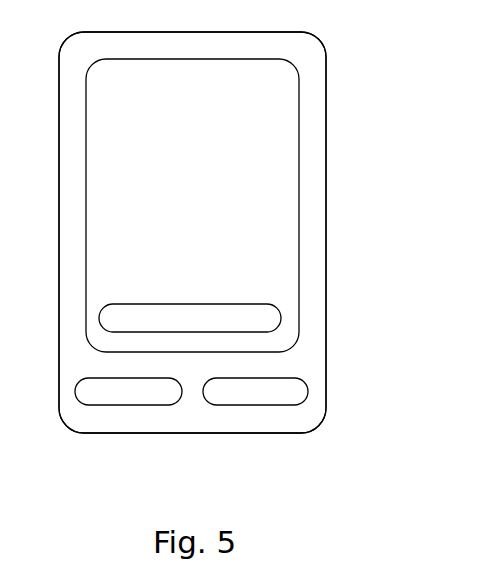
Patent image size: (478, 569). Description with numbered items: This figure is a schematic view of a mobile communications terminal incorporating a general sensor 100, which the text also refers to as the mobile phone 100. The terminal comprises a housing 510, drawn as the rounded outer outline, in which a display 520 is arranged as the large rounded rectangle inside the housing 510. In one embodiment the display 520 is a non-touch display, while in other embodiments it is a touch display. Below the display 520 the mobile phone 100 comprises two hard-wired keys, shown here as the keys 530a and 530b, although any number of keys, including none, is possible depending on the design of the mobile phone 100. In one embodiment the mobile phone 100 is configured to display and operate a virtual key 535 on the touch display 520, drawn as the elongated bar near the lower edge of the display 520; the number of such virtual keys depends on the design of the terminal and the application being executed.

The general sensor 100 is at (261, 444).
The housing 510 is at (326, 141).
The display 520 is at (297, 204).
The virtual key 535 is at (281, 319).
The hard-wired key 530a is at (128, 405).
The hard-wired key 530b is at (308, 392).